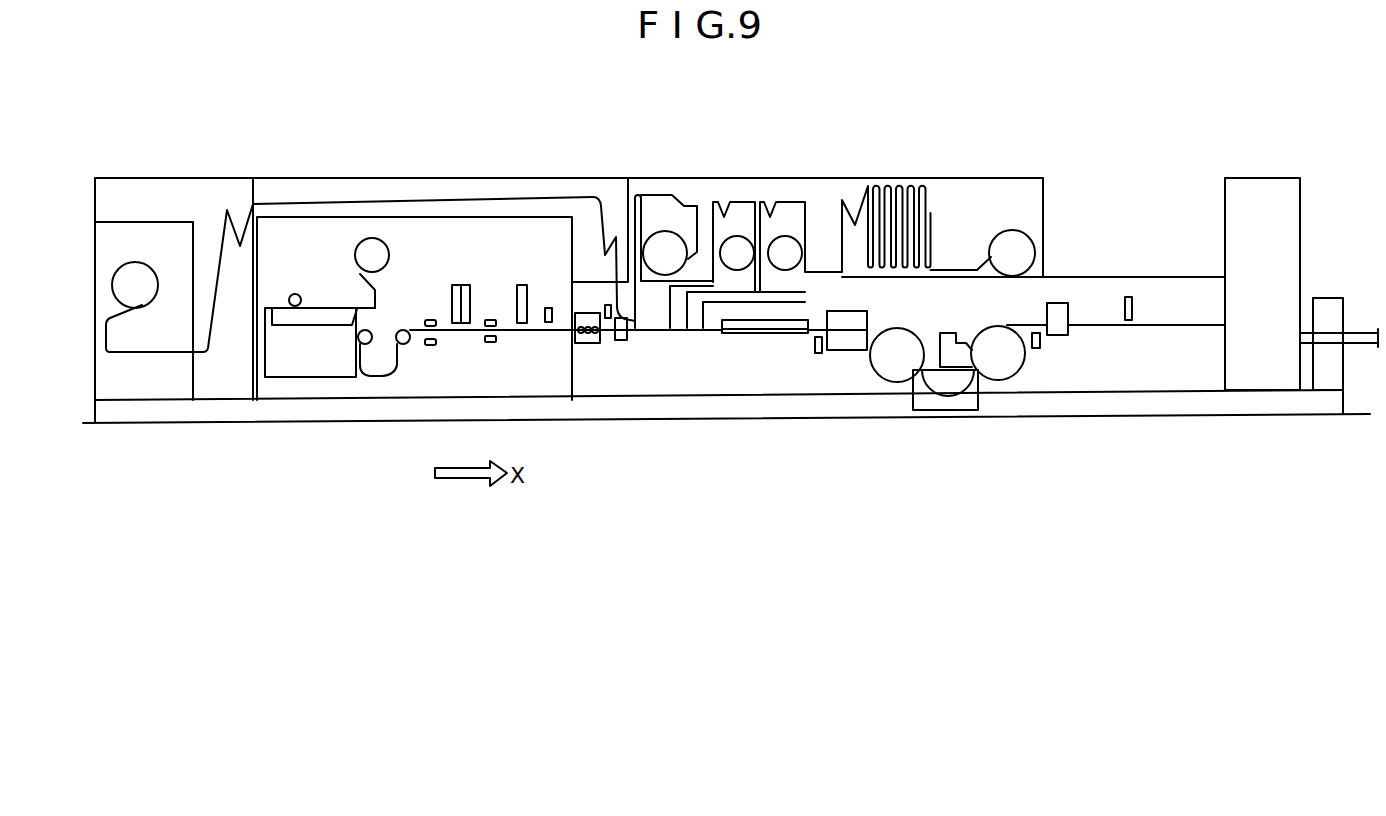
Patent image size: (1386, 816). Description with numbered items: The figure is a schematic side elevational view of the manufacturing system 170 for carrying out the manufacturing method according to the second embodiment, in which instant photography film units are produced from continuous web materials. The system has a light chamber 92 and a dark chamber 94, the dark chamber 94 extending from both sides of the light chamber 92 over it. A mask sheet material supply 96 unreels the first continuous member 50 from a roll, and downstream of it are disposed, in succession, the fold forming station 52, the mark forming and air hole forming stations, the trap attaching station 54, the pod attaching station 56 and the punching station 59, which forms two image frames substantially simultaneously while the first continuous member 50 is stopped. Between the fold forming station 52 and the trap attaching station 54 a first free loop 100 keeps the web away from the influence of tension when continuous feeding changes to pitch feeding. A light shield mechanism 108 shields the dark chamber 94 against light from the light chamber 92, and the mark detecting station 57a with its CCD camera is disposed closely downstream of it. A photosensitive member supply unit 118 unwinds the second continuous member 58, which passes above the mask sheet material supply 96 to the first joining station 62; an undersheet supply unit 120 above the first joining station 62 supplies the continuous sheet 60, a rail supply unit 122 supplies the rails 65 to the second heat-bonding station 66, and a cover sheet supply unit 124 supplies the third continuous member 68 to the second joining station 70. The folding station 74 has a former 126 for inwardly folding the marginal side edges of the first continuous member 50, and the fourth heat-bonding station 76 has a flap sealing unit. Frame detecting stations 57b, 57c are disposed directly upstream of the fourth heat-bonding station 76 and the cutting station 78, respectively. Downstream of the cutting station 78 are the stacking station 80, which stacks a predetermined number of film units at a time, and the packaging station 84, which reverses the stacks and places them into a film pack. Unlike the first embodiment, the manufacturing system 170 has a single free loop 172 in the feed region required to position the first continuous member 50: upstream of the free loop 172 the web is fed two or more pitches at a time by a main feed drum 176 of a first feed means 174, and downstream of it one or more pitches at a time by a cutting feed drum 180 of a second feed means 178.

The first continuous member 50 is at (303, 376).
The fold forming station 52 is at (297, 292).
The trap attaching station 54 is at (458, 341).
The pod attaching station 56 is at (533, 299).
The mark detecting station 57a is at (548, 338).
The frame detecting station 57b is at (822, 358).
The frame detecting station 57c is at (1043, 348).
The second continuous member 58 is at (509, 197).
The punching station 59 is at (620, 352).
The continuous sheet 60 is at (663, 195).
The first joining station 62 is at (634, 339).
The rails 65 is at (752, 195).
The second heat-bonding station 66 is at (702, 340).
The third continuous member 68 is at (930, 213).
The second joining station 70 is at (718, 315).
The folding station 74 is at (745, 344).
The fourth heat-bonding station 76 is at (867, 311).
The cutting station 78 is at (1074, 299).
The stacking station 80 is at (1170, 304).
The packaging station 84 is at (1264, 192).
The light chamber 92 is at (500, 392).
The dark chamber 94 is at (699, 389).
The mask sheet material supply 96 is at (391, 251).
The first free loop 100 is at (379, 376).
The light shield mechanism 108 is at (592, 348).
The photosensitive member supply unit 118 is at (141, 262).
The undersheet supply unit 120 is at (688, 224).
The rail supply unit 122 is at (758, 182).
The cover sheet supply unit 124 is at (1021, 210).
The former 126 is at (785, 336).
The manufacturing system 170 is at (898, 81).
The free loop 172 is at (948, 411).
The first feed means 174 is at (914, 321).
The main feed drum 176 is at (893, 380).
The second feed means 178 is at (1037, 375).
The cutting feed drum 180 is at (1010, 375).